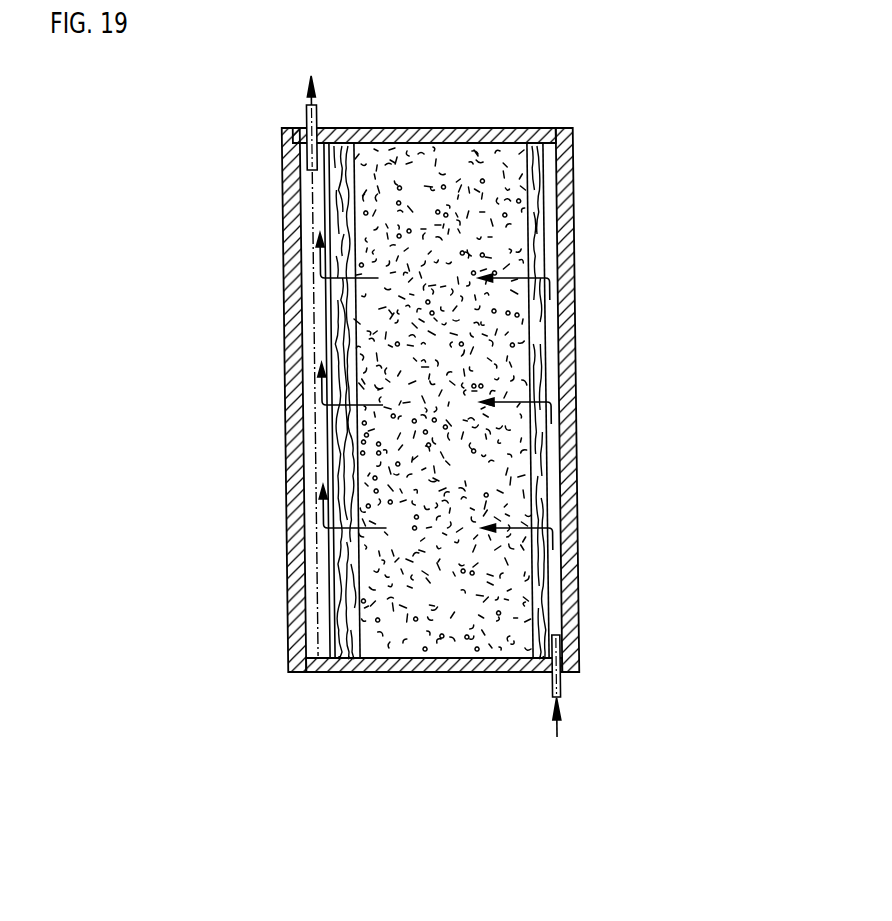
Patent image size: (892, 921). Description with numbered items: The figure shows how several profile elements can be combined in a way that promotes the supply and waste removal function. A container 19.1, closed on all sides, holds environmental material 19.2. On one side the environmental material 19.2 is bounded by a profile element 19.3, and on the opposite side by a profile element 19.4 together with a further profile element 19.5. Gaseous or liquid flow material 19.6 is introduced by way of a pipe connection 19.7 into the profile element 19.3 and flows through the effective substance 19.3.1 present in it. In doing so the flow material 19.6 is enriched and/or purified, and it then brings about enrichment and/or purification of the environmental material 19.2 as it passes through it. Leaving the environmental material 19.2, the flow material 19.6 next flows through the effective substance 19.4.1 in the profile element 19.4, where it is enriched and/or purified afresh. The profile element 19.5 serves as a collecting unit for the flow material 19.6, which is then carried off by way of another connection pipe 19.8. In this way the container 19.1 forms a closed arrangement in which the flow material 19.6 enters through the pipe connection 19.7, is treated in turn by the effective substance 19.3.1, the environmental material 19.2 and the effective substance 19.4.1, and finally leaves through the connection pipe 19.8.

The container 19.1 is at (566, 175).
The environmental material 19.2 is at (468, 225).
The profile element 19.3 is at (552, 383).
The effective substance 19.3.1 is at (537, 440).
The profile element 19.4 is at (340, 360).
The effective substance 19.4.1 is at (348, 462).
The profile element 19.5 is at (310, 263).
The flow material 19.6 is at (565, 722).
The pipe connection 19.7 is at (560, 670).
The connection pipe 19.8 is at (305, 112).